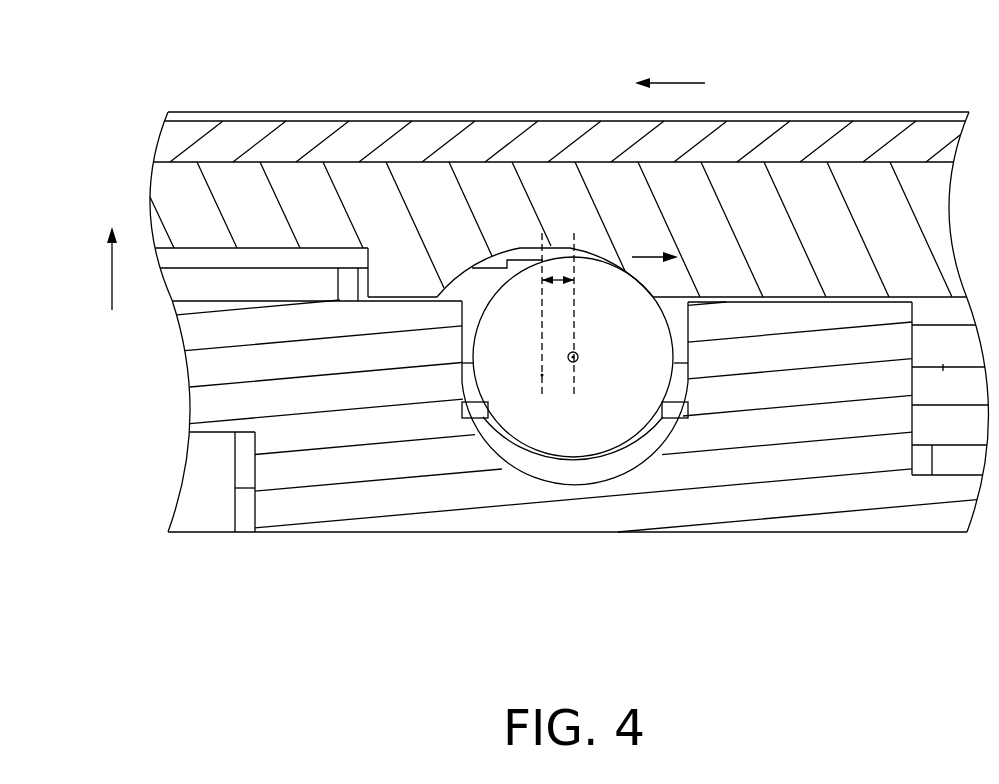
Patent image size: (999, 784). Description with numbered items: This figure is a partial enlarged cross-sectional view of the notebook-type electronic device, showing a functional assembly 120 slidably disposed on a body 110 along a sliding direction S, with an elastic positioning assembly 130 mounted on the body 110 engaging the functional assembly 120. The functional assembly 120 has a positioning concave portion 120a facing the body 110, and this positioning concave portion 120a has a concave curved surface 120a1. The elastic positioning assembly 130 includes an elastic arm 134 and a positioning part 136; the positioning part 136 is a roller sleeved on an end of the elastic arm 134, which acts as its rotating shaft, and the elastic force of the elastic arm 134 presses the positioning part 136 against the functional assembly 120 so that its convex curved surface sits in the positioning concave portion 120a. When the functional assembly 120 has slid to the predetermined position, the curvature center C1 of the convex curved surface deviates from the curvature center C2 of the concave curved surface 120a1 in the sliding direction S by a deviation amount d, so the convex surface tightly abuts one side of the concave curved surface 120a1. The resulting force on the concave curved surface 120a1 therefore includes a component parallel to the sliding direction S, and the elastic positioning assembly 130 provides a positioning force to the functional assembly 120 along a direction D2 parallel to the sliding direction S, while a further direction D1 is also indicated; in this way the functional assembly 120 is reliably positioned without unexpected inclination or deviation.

The body 110 is at (308, 502).
The functional assembly 120 is at (559, 167).
The positioning concave portion 120a is at (530, 165).
The concave curved surface 120a1 is at (484, 256).
The elastic positioning assembly 130 is at (604, 433).
The elastic arm 134 is at (563, 363).
The positioning part 136 is at (622, 408).
The curvature center of the convex curved surface C1 is at (578, 356).
The curvature center of the concave curved surface C2 is at (540, 375).
The deviation amount d is at (558, 315).
The sliding direction S is at (675, 82).
The direction D1 is at (112, 273).
The direction D2 is at (638, 257).